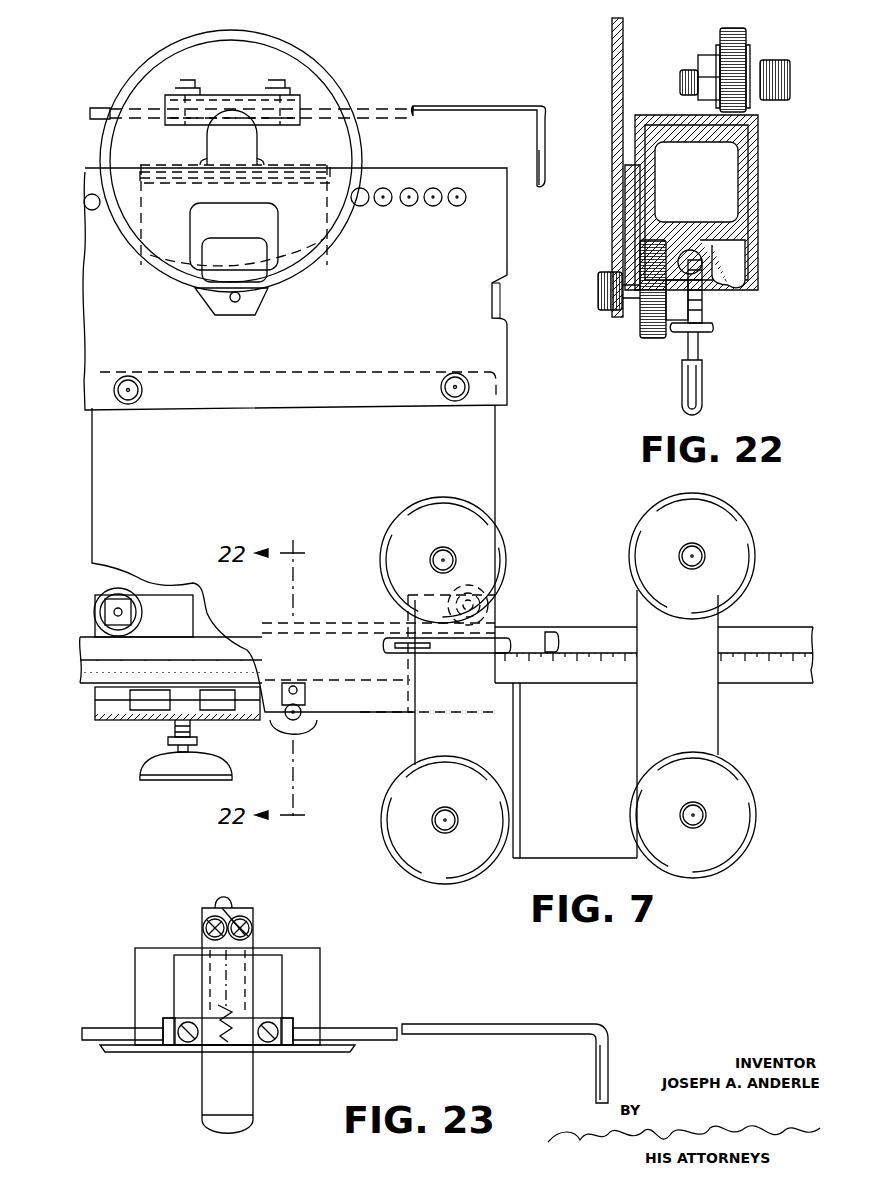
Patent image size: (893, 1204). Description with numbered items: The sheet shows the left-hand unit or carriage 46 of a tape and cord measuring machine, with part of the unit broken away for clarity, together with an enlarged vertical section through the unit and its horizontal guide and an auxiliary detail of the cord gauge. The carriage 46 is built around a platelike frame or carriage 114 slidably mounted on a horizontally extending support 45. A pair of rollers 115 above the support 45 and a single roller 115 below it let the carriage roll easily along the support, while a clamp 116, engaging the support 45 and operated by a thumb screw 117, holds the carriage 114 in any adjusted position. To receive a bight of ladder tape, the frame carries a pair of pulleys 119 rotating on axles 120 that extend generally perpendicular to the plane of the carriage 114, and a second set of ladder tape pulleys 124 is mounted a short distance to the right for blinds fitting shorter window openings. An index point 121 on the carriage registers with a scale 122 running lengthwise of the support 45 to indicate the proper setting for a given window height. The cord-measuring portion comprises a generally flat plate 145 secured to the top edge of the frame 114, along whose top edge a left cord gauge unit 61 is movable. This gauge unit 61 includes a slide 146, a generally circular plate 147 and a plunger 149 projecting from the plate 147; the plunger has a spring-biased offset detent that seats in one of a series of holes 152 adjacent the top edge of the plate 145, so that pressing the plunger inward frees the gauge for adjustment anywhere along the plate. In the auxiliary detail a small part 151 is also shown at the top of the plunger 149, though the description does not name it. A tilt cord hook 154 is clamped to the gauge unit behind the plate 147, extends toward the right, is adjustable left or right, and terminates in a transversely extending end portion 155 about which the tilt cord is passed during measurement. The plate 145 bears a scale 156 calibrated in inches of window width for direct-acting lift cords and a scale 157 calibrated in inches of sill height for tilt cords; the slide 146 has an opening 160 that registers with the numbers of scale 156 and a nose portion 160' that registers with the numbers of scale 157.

In FIG. 7, the horizontally extending support 45 is at (584, 637).
In FIG. 22, the horizontally extending support 45 is at (755, 165).
In FIG. 7, the left-hand unit or carriage 46 is at (382, 752).
In FIG. 7, the left cord gauge unit 61 is at (324, 42).
In FIG. 23, the left cord gauge unit 61 is at (331, 981).
In FIG. 7, the platelike frame or carriage 114 is at (488, 452).
In FIG. 22, the platelike frame or carriage 114 is at (625, 46).
In FIG. 7, the rollers 115 is at (105, 600).
In FIG. 22, the rollers 115 is at (745, 40).
In FIG. 7, the clamp 116 is at (140, 705).
In FIG. 22, the clamp 116 is at (725, 237).
In FIG. 7, the thumb screw 117 is at (160, 782).
In FIG. 22, the thumb screw 117 is at (693, 388).
In FIG. 7, the pulleys 119 is at (498, 532).
In FIG. 7, the axles 120 is at (438, 548).
In FIG. 7, the index point 121 is at (553, 635).
In FIG. 7, the scale 122 is at (590, 672).
In FIG. 7, the second set of ladder tape pulleys 124 is at (750, 533).
In FIG. 7, the flat plate 145 is at (485, 226).
In FIG. 7, the slide 146 is at (257, 300).
In FIG. 7, the generally circular plate 147 is at (320, 100).
In FIG. 23, the generally circular plate 147 is at (328, 1058).
In FIG. 7, the plunger 149 is at (250, 135).
In FIG. 23, the plunger 149 is at (255, 945).
In FIG. 23, the lug 151 is at (232, 912).
In FIG. 7, the holes 152 is at (457, 188).
In FIG. 7, the tilt cord hook 154 is at (440, 106).
In FIG. 23, the tilt cord hook 154 is at (442, 1026).
In FIG. 7, the transversely extending end portion 155 is at (546, 148).
In FIG. 7, the scale 156 is at (468, 265).
In FIG. 7, the scale 157 is at (478, 328).
In FIG. 7, the opening 160 is at (254, 240).
In FIG. 7, the nose portion 160' is at (210, 313).